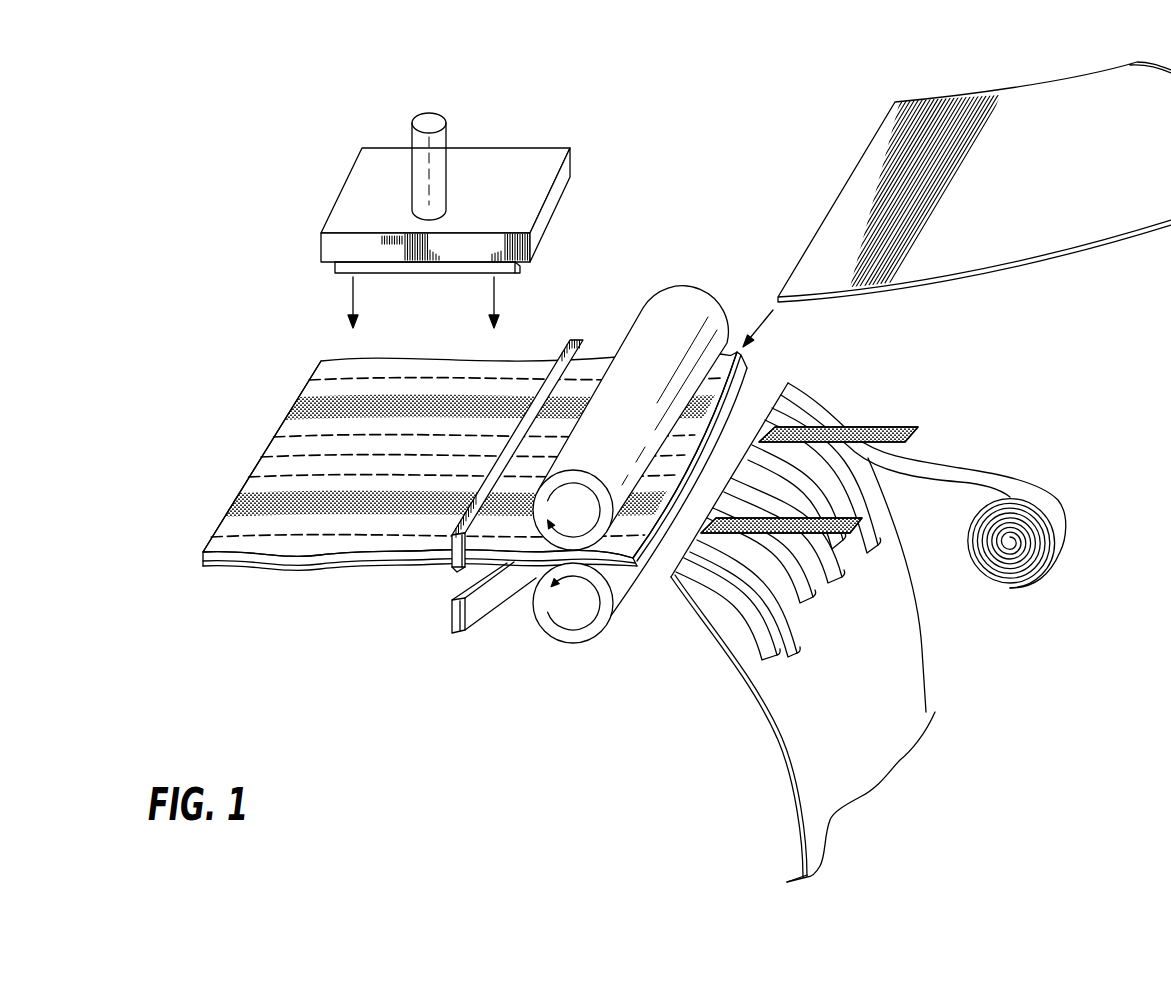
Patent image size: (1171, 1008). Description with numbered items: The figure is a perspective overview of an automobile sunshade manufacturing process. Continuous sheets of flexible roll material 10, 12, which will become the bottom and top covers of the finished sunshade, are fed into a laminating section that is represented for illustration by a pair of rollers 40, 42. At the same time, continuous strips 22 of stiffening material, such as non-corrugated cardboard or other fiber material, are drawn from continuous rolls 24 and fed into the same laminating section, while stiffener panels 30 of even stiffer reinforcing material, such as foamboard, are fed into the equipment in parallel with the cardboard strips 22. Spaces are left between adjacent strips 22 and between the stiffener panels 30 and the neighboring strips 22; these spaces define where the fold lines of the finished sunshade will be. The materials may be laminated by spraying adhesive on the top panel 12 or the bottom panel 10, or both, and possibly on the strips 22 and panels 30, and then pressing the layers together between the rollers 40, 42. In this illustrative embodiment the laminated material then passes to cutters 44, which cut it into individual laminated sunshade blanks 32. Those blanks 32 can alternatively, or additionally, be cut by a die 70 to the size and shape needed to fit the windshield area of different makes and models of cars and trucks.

The flexible roll material 10 is at (792, 797).
The flexible roll material 12 is at (883, 155).
The strips 22 is at (989, 471).
The rolls 24 is at (1010, 588).
The stiffener panels 30 is at (883, 427).
The laminated sunshade blanks 32 is at (253, 567).
The roller 40 is at (573, 643).
The roller 42 is at (685, 292).
The cutters 44 is at (573, 340).
The die 70 is at (515, 147).